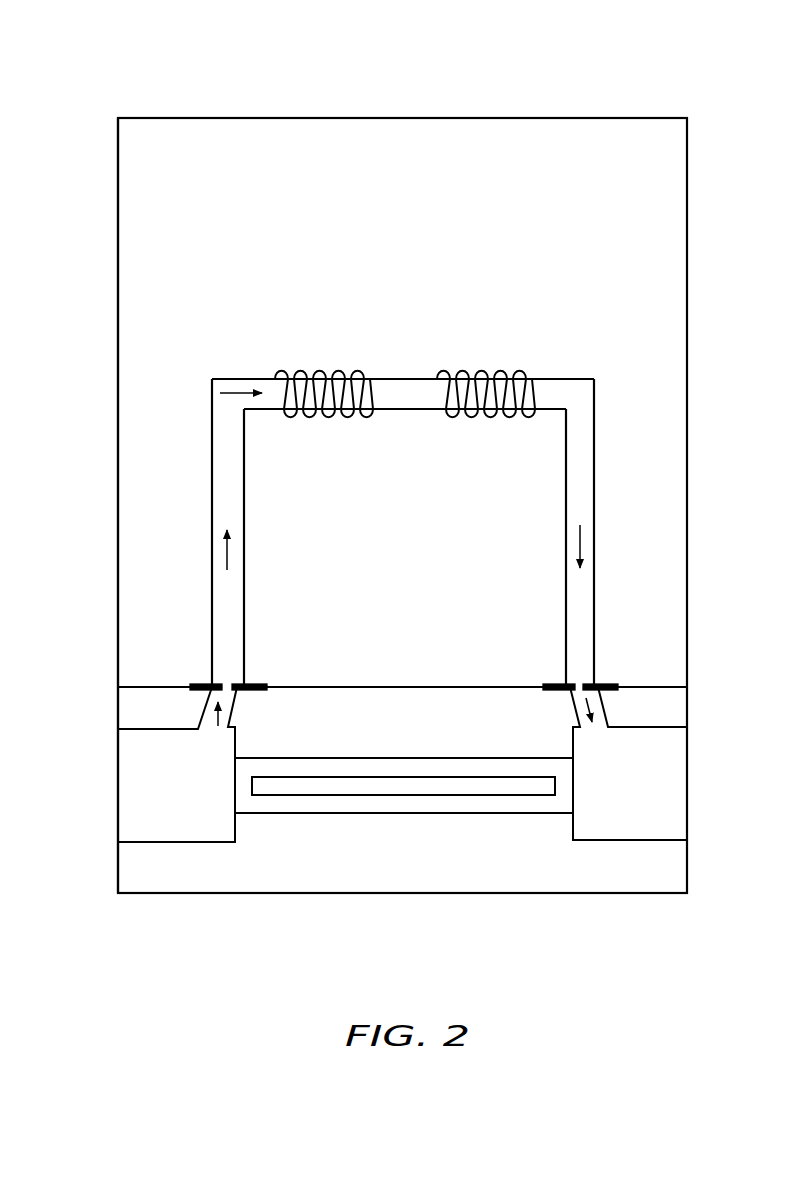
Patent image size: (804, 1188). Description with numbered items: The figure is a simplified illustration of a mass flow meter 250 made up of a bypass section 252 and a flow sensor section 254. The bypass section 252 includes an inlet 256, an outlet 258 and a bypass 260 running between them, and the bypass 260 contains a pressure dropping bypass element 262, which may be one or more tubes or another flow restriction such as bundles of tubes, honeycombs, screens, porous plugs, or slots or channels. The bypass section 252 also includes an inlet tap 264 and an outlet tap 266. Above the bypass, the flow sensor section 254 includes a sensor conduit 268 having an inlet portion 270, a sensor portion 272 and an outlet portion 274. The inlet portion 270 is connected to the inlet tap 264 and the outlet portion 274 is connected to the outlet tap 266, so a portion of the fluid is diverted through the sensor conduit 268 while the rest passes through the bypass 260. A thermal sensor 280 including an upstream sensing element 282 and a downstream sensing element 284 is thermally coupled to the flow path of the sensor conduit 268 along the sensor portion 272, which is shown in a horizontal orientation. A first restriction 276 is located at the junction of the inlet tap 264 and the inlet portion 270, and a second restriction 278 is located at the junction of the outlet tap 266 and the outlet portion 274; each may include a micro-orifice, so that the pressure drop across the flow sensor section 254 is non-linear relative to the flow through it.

The flow meter 250 is at (686, 50).
The bypass section 252 is at (118, 700).
The flow sensor section 254 is at (118, 467).
The inlet 256 is at (190, 830).
The outlet 258 is at (613, 830).
The bypass 260 is at (303, 803).
The pressure dropping bypass element 262 is at (448, 790).
The inlet tap 264 is at (205, 715).
The outlet tap 266 is at (607, 717).
The sensor conduit 268 is at (205, 362).
The inlet portion 270 is at (245, 592).
The sensor portion 272 is at (415, 410).
The outlet portion 274 is at (565, 628).
The first restriction 276 is at (197, 684).
The second restriction 278 is at (600, 685).
The thermal sensor 280 is at (405, 334).
The upstream sensing element 282 is at (320, 378).
The downstream sensing element 284 is at (477, 378).